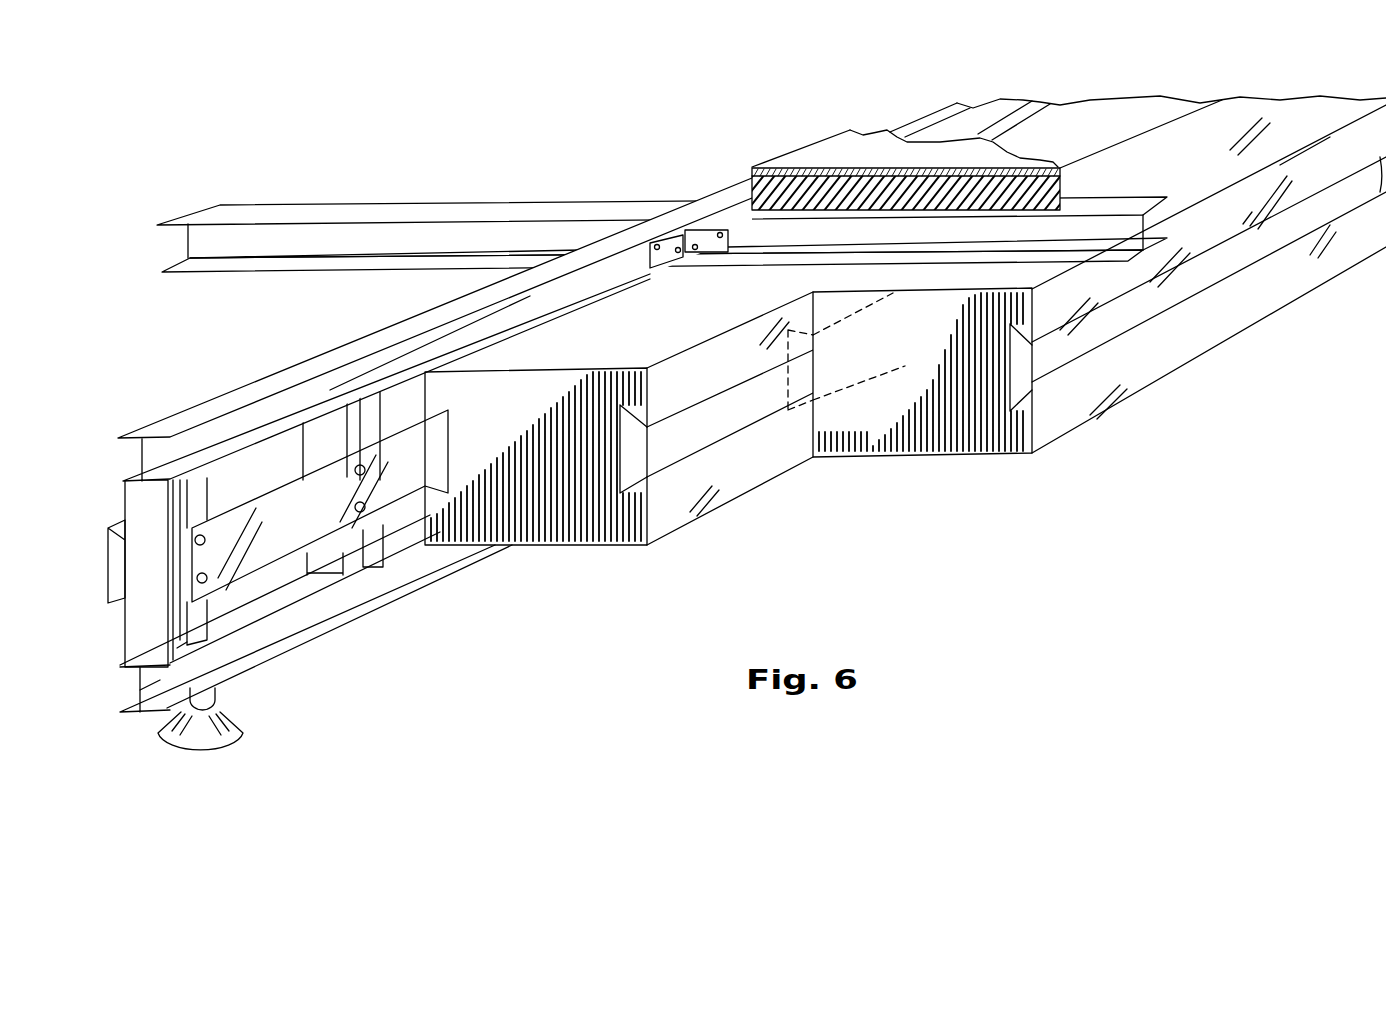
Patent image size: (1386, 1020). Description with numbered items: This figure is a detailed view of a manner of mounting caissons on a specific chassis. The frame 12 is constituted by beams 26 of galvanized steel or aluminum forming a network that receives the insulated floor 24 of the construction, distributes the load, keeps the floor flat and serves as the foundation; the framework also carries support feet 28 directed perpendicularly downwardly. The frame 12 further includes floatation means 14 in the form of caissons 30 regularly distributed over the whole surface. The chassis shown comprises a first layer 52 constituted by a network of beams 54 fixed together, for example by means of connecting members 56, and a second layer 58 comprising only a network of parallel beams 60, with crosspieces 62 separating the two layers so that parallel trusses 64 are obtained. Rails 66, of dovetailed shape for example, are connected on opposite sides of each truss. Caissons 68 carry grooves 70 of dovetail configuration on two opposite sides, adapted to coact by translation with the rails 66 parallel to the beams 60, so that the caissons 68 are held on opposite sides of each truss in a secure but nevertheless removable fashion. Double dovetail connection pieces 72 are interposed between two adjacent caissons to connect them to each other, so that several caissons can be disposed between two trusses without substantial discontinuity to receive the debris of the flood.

The frame 12 is at (696, 197).
The floatation means 14 is at (905, 333).
The insulated floor 24 is at (832, 153).
The beams 26 is at (583, 213).
The support feet 28 is at (205, 740).
The caissons 30 is at (1153, 347).
The first layer 52 is at (397, 489).
The beams 54 is at (435, 217).
The connecting members 56 is at (705, 232).
The second layer 58 is at (393, 592).
The parallel beams 60 is at (257, 637).
The crosspieces 62 is at (330, 433).
The parallel trusses 64 is at (170, 405).
The rails 66 is at (165, 575).
The caissons 68 is at (700, 493).
The grooves 70 is at (737, 412).
The double dovetail connection pieces 72 is at (862, 375).